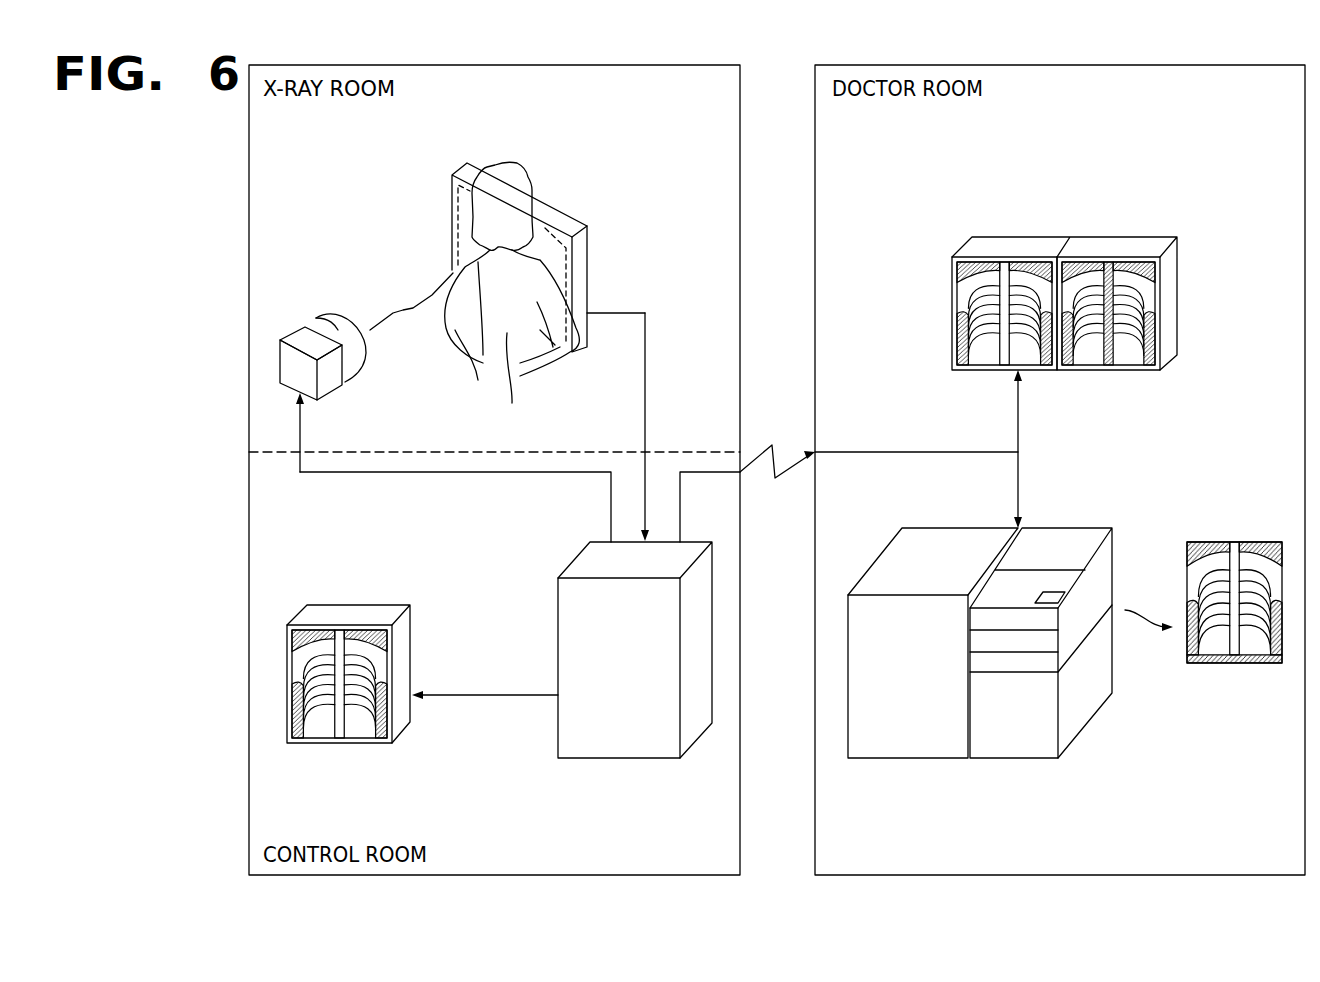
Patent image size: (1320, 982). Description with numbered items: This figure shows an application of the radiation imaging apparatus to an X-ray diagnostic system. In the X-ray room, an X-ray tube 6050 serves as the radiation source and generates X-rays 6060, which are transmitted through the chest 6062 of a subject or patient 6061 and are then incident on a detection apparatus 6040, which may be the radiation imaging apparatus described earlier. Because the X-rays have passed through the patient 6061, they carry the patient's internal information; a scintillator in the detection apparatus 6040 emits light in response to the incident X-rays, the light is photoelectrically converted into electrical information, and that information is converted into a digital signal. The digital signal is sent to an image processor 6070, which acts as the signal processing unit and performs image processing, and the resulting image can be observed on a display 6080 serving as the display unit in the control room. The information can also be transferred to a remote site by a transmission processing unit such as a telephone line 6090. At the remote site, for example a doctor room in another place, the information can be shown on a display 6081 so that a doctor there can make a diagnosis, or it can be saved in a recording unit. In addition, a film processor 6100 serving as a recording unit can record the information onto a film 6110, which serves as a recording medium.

The detection apparatus 6040 is at (556, 227).
The X-ray tube 6050 is at (290, 330).
The X-rays 6060 is at (398, 309).
The patient 6061 is at (508, 162).
The chest 6062 is at (512, 343).
The image processor 6070 is at (558, 722).
The display 6080 is at (412, 642).
The display 6081 is at (985, 243).
The telephone line 6090 is at (773, 445).
The film processor 6100 is at (947, 527).
The film 6110 is at (1233, 542).